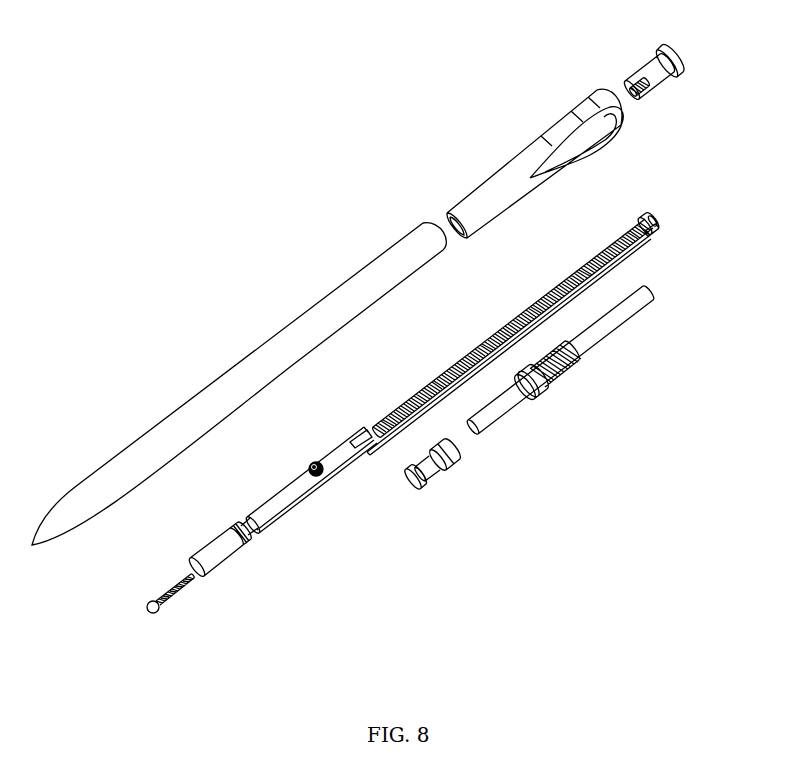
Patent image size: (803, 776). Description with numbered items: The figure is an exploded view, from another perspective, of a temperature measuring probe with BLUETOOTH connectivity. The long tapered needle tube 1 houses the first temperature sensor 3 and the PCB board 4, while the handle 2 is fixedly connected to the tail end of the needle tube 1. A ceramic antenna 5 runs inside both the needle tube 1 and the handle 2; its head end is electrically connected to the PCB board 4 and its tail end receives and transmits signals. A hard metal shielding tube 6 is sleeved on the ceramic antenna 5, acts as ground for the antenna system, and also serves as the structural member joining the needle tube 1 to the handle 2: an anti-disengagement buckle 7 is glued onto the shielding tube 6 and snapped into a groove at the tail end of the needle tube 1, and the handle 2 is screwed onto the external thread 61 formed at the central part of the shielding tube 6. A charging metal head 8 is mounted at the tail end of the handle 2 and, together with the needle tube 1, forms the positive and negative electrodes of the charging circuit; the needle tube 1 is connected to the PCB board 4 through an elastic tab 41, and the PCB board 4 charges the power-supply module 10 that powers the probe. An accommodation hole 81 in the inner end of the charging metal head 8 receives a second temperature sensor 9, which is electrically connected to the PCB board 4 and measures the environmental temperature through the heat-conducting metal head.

The needle tube 1 is at (502, 185).
The handle 2 is at (340, 307).
The first temperature sensor 3 is at (160, 612).
The PCB board 4 is at (285, 500).
The elastic tab 41 is at (327, 480).
The ceramic antenna 5 is at (465, 352).
The shielding tube 6 is at (615, 323).
The external thread 61 is at (577, 367).
The anti-disengagement buckle 7 is at (453, 457).
The charging metal head 8 is at (648, 68).
The accommodation hole 81 is at (627, 80).
The second temperature sensor 9 is at (662, 228).
The power-supply module 10 is at (223, 557).